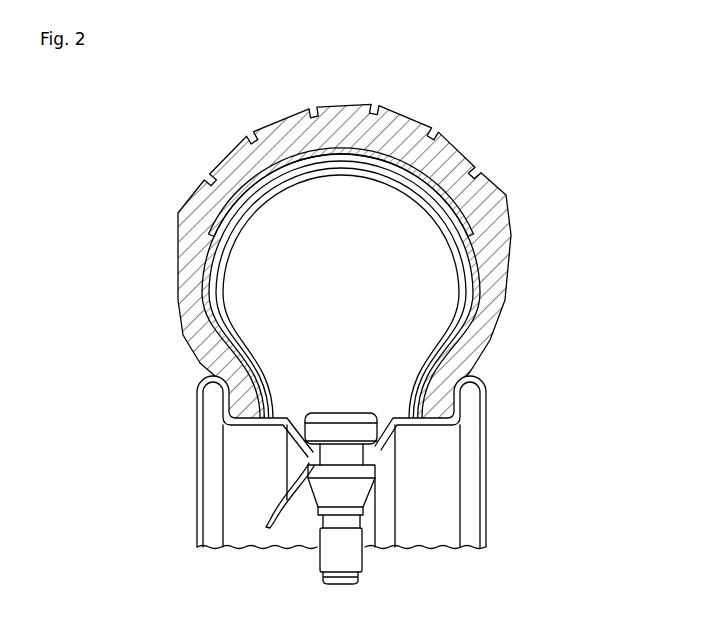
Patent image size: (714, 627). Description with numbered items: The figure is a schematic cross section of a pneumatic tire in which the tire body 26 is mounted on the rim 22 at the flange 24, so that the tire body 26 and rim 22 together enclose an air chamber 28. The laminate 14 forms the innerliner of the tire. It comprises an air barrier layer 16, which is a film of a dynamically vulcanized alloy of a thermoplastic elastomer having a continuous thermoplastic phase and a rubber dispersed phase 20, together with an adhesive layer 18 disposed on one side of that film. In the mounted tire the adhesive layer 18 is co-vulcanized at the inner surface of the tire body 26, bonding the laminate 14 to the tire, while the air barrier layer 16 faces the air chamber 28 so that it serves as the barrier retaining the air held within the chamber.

The laminate 14 is at (273, 199).
The air barrier layer 16 is at (237, 230).
The adhesive layer 18 is at (262, 176).
The rubber dispersed phase 20 is at (297, 180).
The rim 22 is at (487, 476).
The flange 24 is at (486, 402).
The tire body 26 is at (506, 270).
The air chamber 28 is at (258, 289).